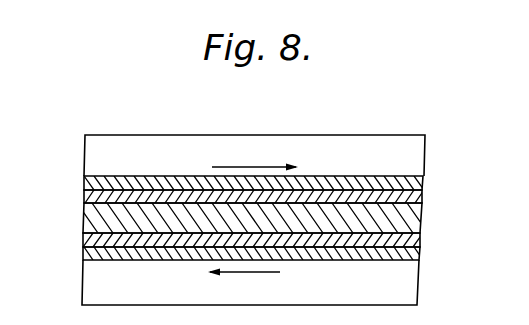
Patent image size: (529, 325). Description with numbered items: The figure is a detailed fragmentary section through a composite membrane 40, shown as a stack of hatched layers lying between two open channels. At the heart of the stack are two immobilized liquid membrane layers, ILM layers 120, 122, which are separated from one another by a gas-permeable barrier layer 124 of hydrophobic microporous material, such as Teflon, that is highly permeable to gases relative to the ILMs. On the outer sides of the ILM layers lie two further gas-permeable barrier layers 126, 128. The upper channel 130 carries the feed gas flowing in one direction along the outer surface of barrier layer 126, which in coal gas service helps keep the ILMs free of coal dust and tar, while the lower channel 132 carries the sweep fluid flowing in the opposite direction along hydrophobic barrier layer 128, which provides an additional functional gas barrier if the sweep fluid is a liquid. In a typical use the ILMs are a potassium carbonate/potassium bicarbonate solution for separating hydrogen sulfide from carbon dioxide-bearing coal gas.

The membrane 40 is at (75, 177).
The feed gas channel 130 is at (412, 158).
The gas-permeable barrier layer 126 is at (424, 185).
The ILM layer 120 is at (424, 200).
The gas-permeable barrier layer 124 is at (420, 223).
The ILM layer 122 is at (422, 247).
The gas-permeable barrier layer 128 is at (422, 257).
The sweep fluid channel 132 is at (408, 281).